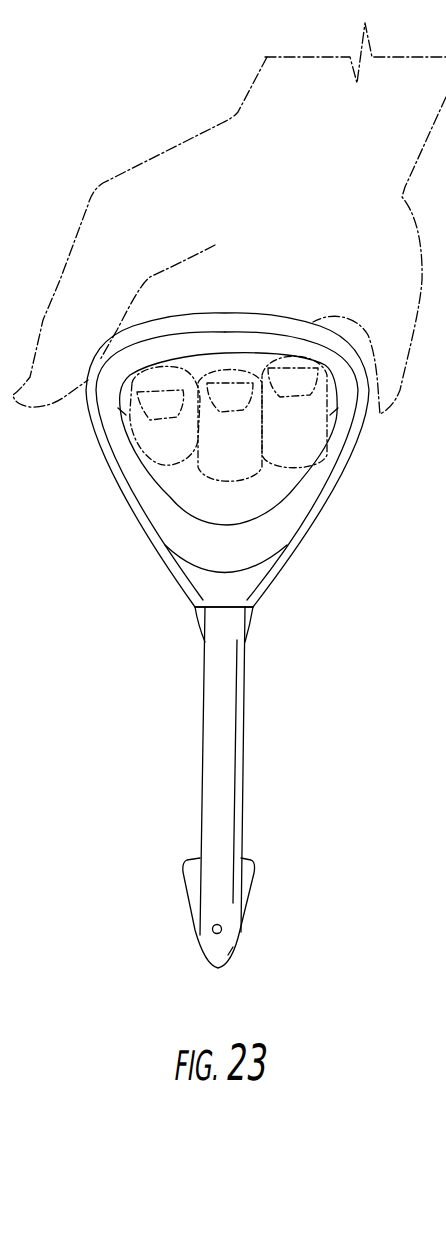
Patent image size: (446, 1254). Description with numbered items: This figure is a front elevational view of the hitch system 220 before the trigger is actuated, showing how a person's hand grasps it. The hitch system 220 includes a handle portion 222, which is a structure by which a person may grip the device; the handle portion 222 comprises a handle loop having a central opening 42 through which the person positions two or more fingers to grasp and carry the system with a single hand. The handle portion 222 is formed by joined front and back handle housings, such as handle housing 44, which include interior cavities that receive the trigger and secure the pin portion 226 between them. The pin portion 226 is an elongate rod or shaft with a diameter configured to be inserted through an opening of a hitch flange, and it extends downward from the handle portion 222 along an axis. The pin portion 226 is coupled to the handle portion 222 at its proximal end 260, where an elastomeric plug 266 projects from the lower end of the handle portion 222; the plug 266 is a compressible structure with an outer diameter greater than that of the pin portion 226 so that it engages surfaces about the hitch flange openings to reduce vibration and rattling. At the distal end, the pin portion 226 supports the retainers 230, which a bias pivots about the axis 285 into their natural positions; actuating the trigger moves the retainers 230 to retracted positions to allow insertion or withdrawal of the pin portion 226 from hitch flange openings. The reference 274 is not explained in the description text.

The hitch system 220 is at (88, 517).
The handle portion 222 is at (338, 485).
The handle housing 44 is at (153, 519).
The tray liner / channel 274 is at (192, 365).
The central opening 42 is at (260, 477).
The proximal end 260 is at (182, 620).
The elastomeric plug 266 is at (252, 622).
The pin portion 226 is at (245, 703).
The retainers 230 is at (182, 870).
The axis 285 is at (222, 929).